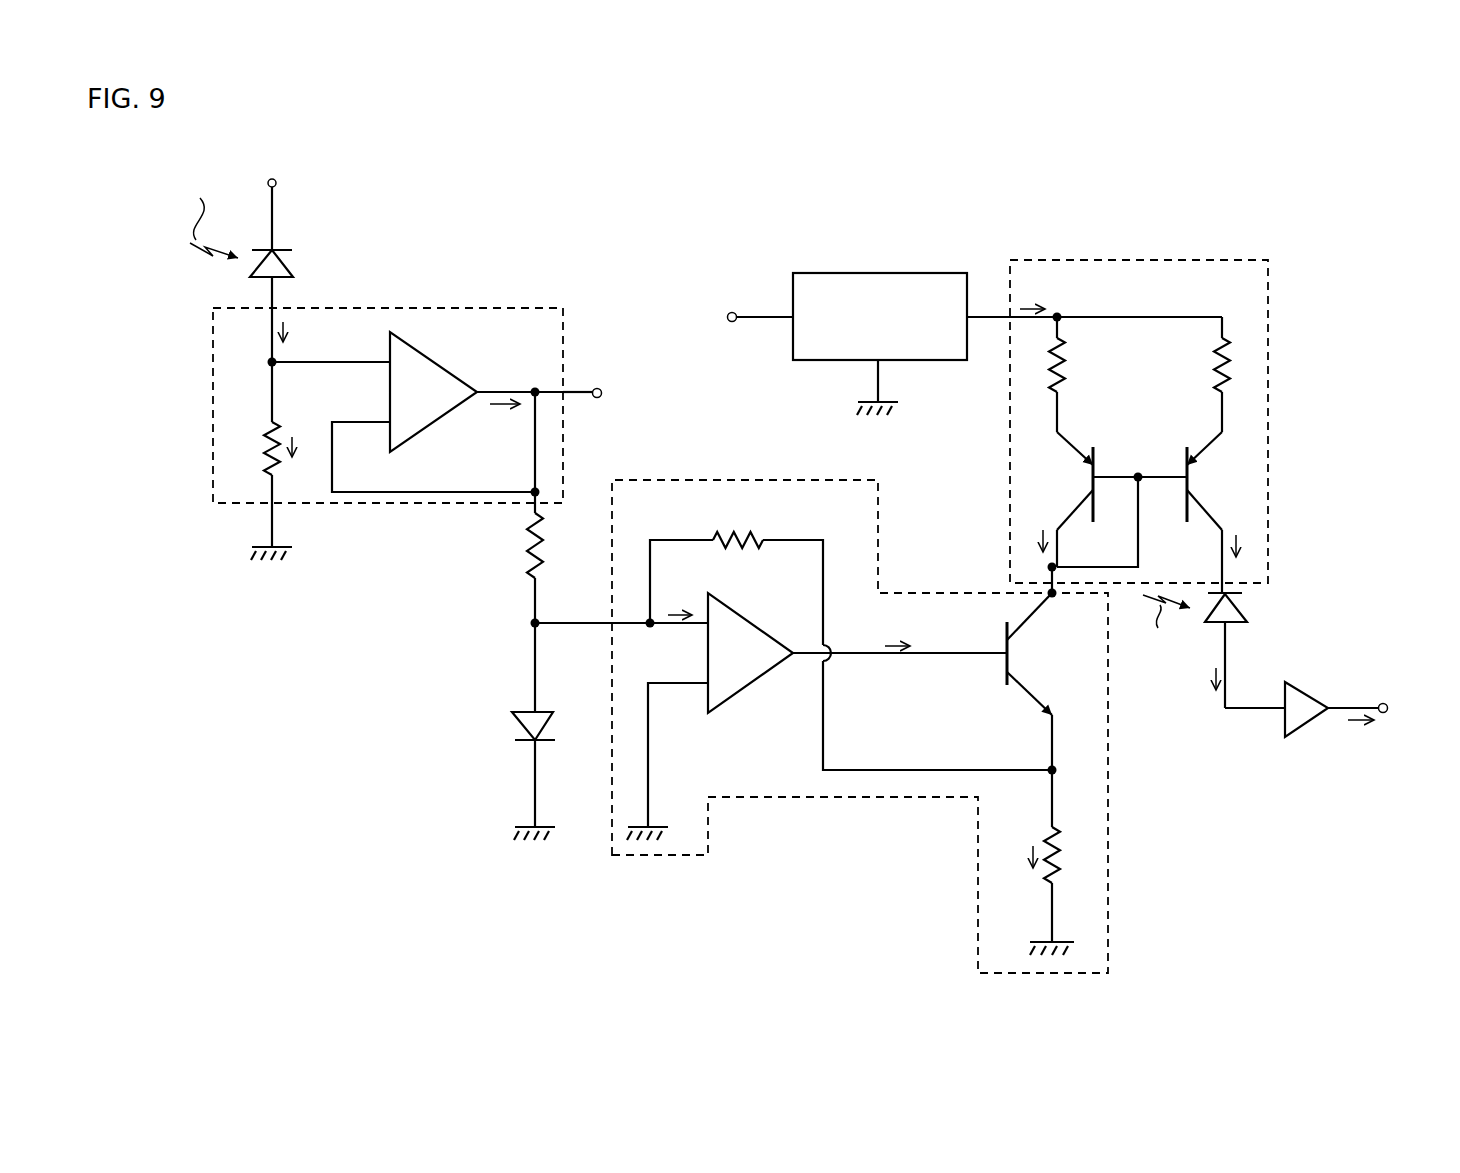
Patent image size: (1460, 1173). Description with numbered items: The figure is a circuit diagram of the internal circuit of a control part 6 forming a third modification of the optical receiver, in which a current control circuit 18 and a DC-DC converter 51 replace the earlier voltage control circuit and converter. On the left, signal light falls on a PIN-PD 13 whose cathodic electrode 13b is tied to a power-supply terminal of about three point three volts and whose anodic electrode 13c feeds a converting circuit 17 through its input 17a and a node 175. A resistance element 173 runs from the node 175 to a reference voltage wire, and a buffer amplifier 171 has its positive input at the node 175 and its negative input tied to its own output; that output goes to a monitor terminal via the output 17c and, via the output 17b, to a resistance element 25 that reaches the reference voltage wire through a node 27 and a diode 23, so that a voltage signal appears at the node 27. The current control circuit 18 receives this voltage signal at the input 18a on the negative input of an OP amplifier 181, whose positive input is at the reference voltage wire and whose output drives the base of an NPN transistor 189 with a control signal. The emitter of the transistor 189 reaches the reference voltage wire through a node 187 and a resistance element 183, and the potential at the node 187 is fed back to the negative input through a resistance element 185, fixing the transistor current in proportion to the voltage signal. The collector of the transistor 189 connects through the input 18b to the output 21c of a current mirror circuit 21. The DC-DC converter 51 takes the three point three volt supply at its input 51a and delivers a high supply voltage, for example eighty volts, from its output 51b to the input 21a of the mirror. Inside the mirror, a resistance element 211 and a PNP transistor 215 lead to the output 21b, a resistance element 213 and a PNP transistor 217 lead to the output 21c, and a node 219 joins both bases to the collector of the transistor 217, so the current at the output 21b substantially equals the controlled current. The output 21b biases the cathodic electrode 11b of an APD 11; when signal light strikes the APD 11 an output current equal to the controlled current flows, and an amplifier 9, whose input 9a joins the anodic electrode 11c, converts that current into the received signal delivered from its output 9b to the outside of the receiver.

The control part 6 is at (657, 230).
The amplifier 9 is at (1308, 725).
The inverter input 9a is at (1283, 712).
The inverter output 9b is at (1330, 690).
The APD 11 is at (1240, 612).
The cathodic electrode 11b is at (1234, 597).
The anodic electrode 11c is at (1230, 622).
The PIN-PD 13 is at (286, 262).
The cathodic electrode 13b is at (280, 247).
The anodic electrode 13c is at (258, 280).
The converting circuit 17 is at (443, 308).
The input 17a is at (272, 305).
The output 17b is at (530, 505).
The output 17c is at (563, 392).
The buffer amplifier 171 is at (438, 362).
The resistance element 173 is at (266, 442).
The node 175 is at (268, 363).
The current control circuit 18 is at (778, 797).
The input 18a is at (610, 625).
The input 18b is at (1055, 595).
The OP amplifier 181 is at (752, 688).
The resistance element 183 is at (1060, 853).
The resistance element 185 is at (752, 536).
The node 187 is at (1048, 768).
The NPN transistor 189 is at (1004, 678).
The current mirror circuit 21 is at (1268, 375).
The input 21a is at (1010, 315).
The output 21b is at (1228, 575).
The output 21c is at (1049, 567).
The resistance element 211 is at (1214, 366).
The resistance element 213 is at (1065, 360).
The PNP transistor 215 is at (1187, 450).
The PNP transistor 217 is at (1093, 450).
The node 219 is at (1138, 475).
The diode 23 is at (517, 722).
The resistance element 25 is at (527, 550).
The node 27 is at (531, 625).
The DC-DC converter 51 is at (888, 273).
The input 51a is at (792, 322).
The output 51b is at (970, 322).